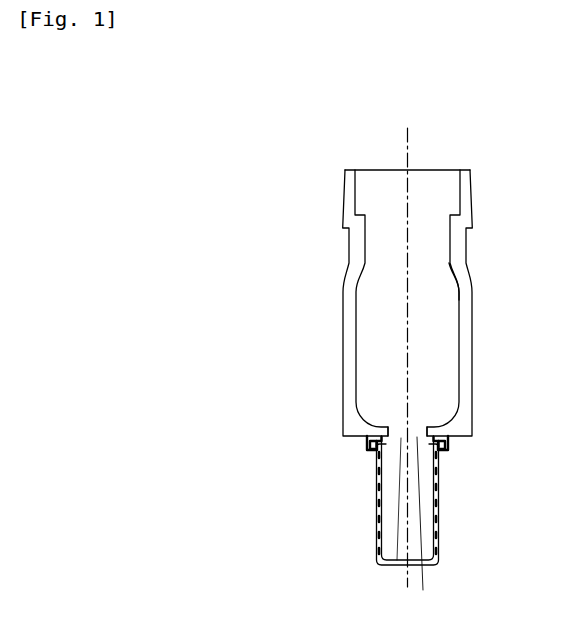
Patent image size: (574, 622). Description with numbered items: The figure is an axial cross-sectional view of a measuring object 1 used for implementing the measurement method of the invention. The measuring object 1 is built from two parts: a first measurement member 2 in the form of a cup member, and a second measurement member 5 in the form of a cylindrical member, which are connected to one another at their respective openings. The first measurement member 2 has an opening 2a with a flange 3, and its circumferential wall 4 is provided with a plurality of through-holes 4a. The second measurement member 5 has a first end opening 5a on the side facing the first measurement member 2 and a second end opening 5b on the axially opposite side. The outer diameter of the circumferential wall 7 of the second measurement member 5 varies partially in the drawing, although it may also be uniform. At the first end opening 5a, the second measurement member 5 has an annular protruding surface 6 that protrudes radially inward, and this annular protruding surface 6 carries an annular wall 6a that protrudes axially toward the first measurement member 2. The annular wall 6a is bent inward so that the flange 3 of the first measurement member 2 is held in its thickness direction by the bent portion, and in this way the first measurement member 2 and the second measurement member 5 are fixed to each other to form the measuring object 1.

The measuring object 1 is at (426, 371).
The first measurement member 2 is at (433, 500).
The opening 2a is at (400, 425).
The flange 3 is at (370, 452).
The circumferential wall 4 is at (438, 527).
The through-holes 4a is at (437, 542).
The second measurement member 5 is at (415, 375).
The first end opening 5a is at (425, 526).
The second end opening 5b is at (433, 170).
The annular protruding surface 6 is at (380, 430).
The annular wall 6a is at (445, 452).
The circumferential wall 7 is at (463, 288).